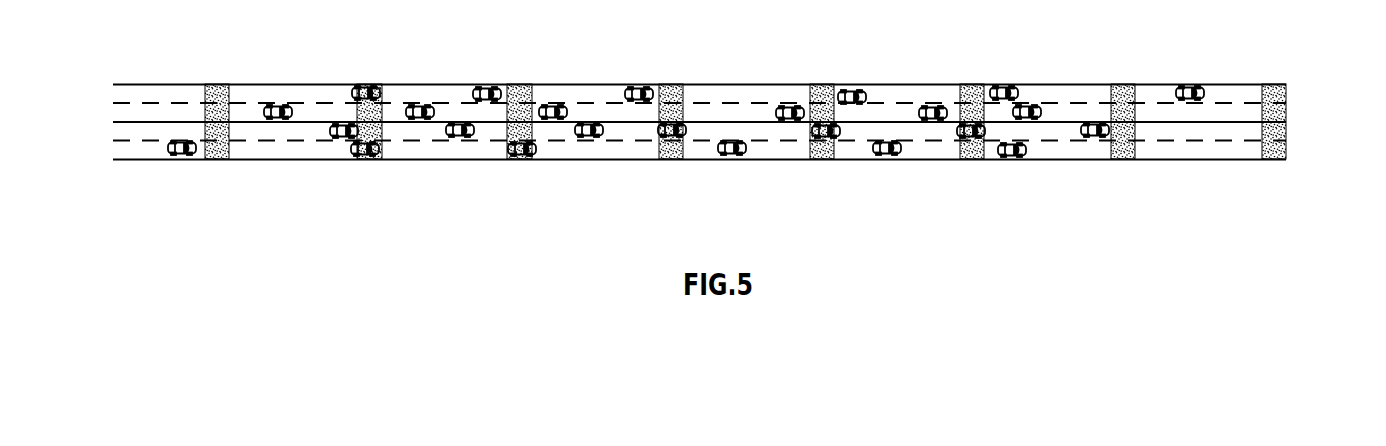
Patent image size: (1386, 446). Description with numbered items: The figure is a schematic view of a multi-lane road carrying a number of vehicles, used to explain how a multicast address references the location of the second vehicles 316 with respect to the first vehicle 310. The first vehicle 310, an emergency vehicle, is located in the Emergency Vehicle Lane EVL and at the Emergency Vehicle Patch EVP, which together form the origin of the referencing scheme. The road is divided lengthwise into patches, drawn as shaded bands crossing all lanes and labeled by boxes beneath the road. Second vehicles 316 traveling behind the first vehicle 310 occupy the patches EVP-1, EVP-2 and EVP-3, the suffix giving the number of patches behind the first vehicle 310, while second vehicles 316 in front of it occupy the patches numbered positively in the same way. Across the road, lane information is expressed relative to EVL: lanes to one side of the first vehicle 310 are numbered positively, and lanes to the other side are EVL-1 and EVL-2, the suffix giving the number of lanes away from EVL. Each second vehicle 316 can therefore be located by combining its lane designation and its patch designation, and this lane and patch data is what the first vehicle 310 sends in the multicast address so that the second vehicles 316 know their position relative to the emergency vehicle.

The first vehicle 310 is at (672, 115).
The second vehicles 316 is at (347, 142).
The Emergency Vehicle Patch EVP is at (675, 132).
The patch three behind the first vehicle EVP-3 is at (217, 160).
The patch two behind the first vehicle EVP-2 is at (369, 160).
The patch one behind the first vehicle EVP-1 is at (519, 160).
The lane two to the other side of the emergency vehicle lane EVL-2 is at (1250, 97).
The lane one to the other side of the emergency vehicle lane EVL-1 is at (1250, 105).
The Emergency Vehicle Lane EVL is at (1250, 128).